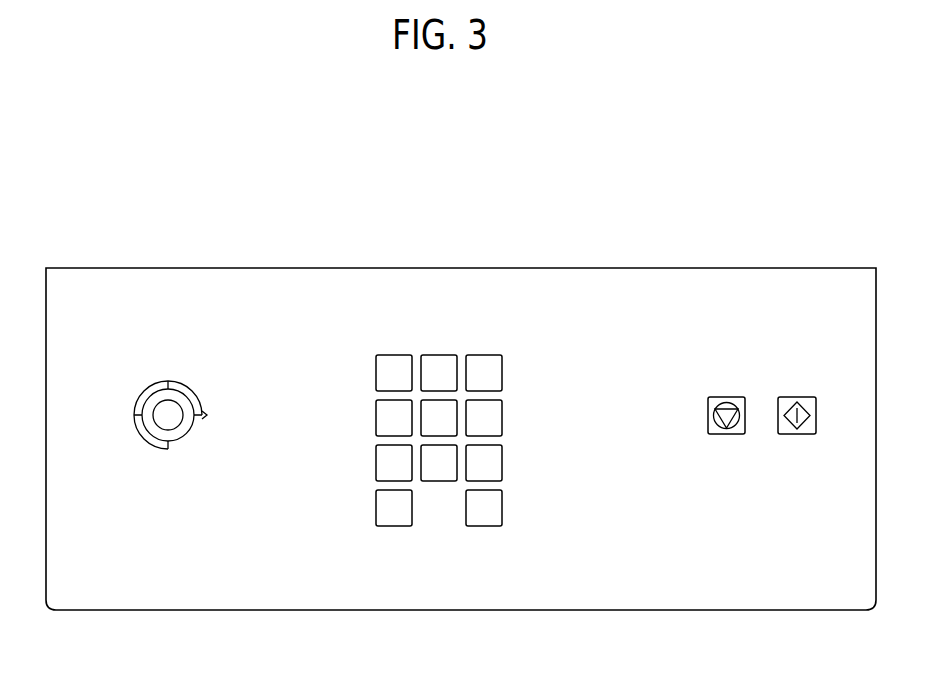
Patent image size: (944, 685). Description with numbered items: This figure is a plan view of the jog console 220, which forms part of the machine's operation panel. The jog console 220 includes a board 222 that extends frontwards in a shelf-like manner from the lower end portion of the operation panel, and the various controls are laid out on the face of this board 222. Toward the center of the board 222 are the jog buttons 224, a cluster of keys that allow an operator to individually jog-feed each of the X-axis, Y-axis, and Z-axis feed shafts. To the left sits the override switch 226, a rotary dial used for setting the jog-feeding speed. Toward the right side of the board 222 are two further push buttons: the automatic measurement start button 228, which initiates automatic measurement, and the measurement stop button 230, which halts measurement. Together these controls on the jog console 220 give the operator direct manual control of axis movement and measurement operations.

The jog console 220 is at (503, 227).
The board 222 is at (767, 284).
The jog buttons 224 is at (525, 412).
The override switch 226 is at (146, 388).
The automatic measurement start button 228 is at (789, 434).
The measurement stop button 230 is at (717, 434).